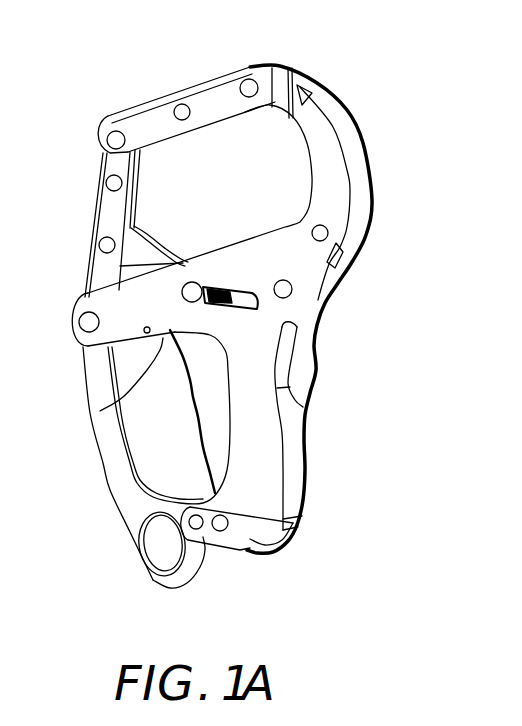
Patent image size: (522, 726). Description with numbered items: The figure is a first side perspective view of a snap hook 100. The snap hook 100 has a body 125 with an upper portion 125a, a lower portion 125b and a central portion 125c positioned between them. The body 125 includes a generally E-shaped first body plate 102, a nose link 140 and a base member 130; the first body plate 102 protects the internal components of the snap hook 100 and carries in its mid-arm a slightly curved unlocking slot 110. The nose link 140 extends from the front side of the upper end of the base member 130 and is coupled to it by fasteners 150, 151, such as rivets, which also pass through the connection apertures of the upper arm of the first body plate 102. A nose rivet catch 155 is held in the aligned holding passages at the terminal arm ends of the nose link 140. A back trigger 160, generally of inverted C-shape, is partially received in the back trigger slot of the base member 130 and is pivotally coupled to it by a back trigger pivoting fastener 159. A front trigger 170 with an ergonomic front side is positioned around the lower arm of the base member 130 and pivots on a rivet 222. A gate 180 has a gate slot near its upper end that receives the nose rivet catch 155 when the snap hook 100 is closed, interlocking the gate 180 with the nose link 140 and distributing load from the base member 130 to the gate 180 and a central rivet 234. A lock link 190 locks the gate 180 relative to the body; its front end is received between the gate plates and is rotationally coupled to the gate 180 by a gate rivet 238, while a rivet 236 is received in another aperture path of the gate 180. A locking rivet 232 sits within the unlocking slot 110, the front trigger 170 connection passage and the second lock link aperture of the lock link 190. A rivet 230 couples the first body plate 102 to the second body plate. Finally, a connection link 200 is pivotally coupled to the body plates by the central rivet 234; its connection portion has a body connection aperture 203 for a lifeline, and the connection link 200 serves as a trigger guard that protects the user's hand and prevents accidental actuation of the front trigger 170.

The snap hook 100 is at (412, 93).
The first body plate 102 is at (268, 447).
The unlocking slot 110 is at (228, 290).
The body 125 is at (368, 168).
The upper portion 125a is at (280, 63).
The lower portion 125b is at (253, 555).
The central portion 125c is at (100, 411).
The base member 130 is at (363, 218).
The nose link 140 is at (219, 85).
The fastener 150 is at (179, 104).
The fastener 151 is at (250, 98).
The nose rivet catch 155 is at (116, 140).
The back trigger pivoting fastener 159 is at (292, 289).
The back trigger 160 is at (309, 373).
The front trigger 170 is at (203, 393).
The gate 180 is at (123, 205).
The lock link 190 is at (153, 257).
The connection link 200 is at (103, 438).
The body connection aperture 203 is at (155, 547).
The rivet 222 is at (290, 530).
The rivet 230 is at (328, 233).
The locking rivet 232 is at (189, 281).
The central rivet 234 is at (83, 325).
The rivet 236 is at (106, 183).
The gate rivet 238 is at (99, 245).